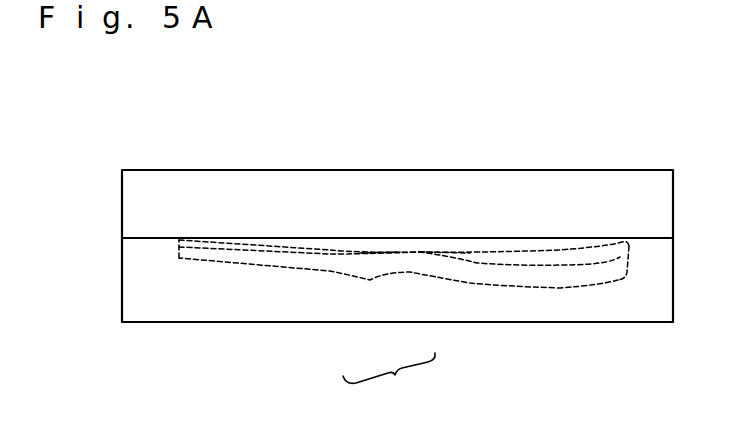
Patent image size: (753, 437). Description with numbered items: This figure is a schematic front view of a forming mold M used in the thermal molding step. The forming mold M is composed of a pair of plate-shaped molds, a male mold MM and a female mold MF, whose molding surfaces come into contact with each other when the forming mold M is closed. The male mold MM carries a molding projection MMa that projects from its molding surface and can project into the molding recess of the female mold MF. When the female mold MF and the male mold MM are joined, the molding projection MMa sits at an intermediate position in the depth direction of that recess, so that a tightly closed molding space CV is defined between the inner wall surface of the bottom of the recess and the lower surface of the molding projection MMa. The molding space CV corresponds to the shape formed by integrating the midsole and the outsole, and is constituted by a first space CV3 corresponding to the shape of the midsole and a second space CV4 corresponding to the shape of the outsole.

The forming mold M is at (414, 124).
The male mold MM is at (468, 185).
The female mold MF is at (577, 277).
The molding projection MMa is at (355, 245).
The second space CV4 is at (383, 252).
The first space CV3 is at (445, 240).
The molding space CV is at (389, 382).